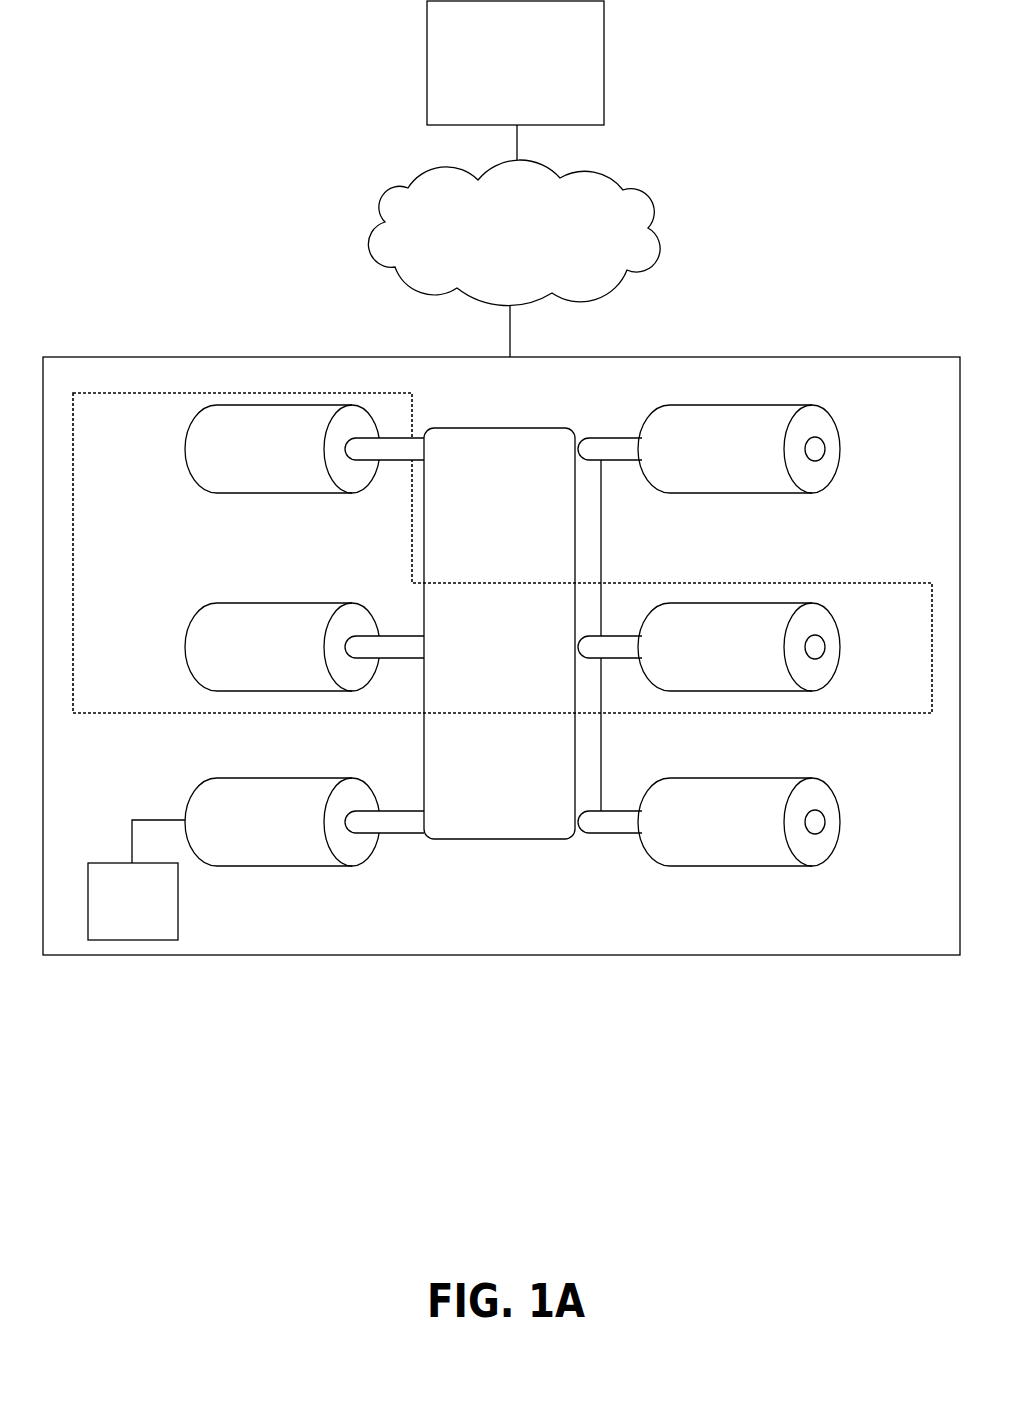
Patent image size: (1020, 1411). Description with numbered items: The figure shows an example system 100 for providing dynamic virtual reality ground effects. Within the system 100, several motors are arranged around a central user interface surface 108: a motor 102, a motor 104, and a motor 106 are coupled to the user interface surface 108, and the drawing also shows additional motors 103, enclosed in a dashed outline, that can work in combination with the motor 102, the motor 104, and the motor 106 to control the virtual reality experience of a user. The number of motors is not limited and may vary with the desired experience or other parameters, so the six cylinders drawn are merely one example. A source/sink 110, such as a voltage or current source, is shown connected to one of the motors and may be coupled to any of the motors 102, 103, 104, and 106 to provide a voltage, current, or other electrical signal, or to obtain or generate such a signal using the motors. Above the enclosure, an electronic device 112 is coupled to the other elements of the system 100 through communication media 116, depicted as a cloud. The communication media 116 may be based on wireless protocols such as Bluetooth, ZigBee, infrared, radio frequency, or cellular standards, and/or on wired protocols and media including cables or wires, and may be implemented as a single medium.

The system 100 is at (757, 128).
The motor 102 is at (747, 447).
The motors 103 is at (152, 383).
The motor 104 is at (743, 830).
The motor 106 is at (258, 840).
The user interface surface 108 is at (495, 810).
The source/sink 110 is at (136, 880).
The electronic device 112 is at (499, 104).
The communication media 116 is at (498, 271).